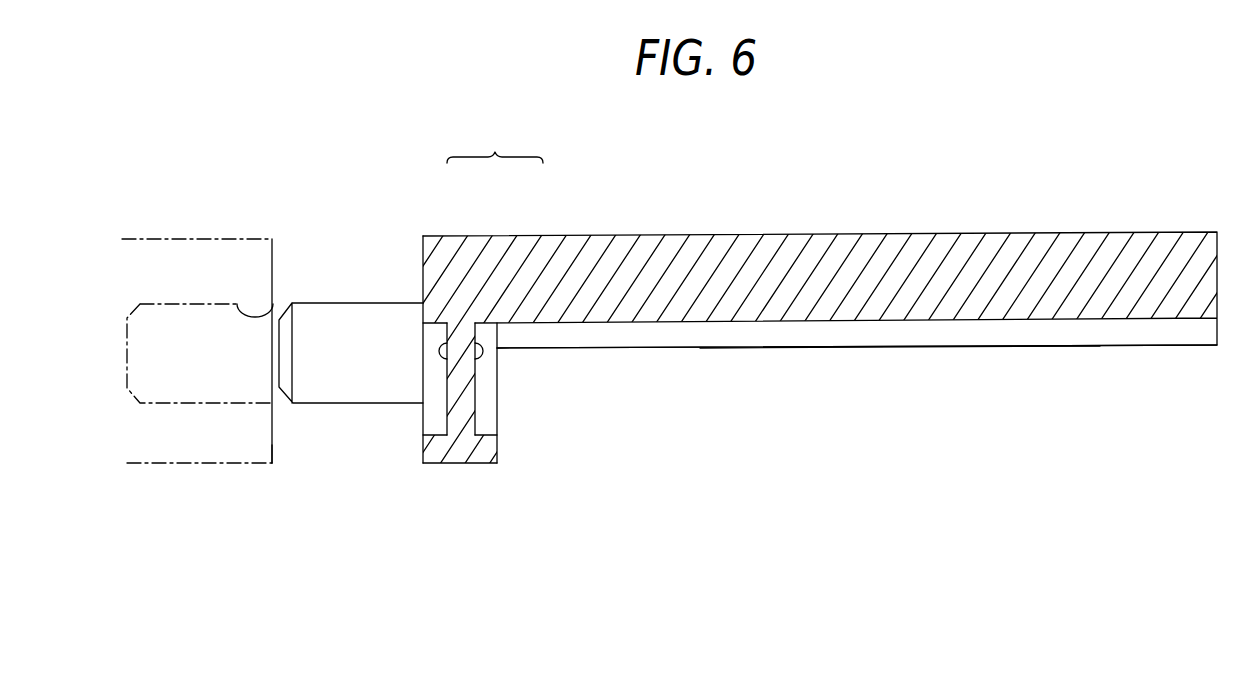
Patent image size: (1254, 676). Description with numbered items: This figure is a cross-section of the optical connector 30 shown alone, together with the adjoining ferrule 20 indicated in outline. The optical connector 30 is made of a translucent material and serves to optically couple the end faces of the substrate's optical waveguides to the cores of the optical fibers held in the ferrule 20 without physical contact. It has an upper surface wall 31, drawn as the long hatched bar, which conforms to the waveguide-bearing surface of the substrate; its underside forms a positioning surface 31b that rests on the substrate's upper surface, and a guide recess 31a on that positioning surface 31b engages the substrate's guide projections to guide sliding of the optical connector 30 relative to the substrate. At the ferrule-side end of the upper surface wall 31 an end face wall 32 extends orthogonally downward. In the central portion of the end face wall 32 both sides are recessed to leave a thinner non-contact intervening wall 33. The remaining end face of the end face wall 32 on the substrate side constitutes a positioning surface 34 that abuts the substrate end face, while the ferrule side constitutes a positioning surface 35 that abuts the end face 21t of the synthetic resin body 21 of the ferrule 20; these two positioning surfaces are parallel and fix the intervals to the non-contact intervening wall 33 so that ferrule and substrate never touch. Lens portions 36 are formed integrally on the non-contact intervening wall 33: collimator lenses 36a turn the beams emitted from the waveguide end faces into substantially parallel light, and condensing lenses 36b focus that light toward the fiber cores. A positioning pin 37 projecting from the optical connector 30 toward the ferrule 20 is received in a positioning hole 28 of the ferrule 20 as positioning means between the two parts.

The ferrule 20 is at (183, 253).
The body 21 is at (206, 362).
The end face 21t is at (273, 433).
The positioning hole 28 is at (272, 308).
The optical connector 30 is at (859, 194).
The upper surface wall 31 is at (1041, 245).
The guide recess 31a is at (1018, 332).
The positioning surface 31b is at (900, 348).
The end face wall 32 is at (448, 447).
The non-contact intervening wall 33 is at (460, 402).
The positioning surface 34 is at (499, 452).
The positioning surface 35 is at (423, 259).
The lens portions 36 is at (490, 243).
The collimator lenses 36a is at (483, 343).
The condensing lenses 36b is at (438, 344).
The positioning pin 37 is at (312, 398).